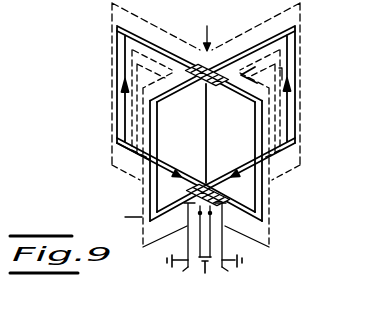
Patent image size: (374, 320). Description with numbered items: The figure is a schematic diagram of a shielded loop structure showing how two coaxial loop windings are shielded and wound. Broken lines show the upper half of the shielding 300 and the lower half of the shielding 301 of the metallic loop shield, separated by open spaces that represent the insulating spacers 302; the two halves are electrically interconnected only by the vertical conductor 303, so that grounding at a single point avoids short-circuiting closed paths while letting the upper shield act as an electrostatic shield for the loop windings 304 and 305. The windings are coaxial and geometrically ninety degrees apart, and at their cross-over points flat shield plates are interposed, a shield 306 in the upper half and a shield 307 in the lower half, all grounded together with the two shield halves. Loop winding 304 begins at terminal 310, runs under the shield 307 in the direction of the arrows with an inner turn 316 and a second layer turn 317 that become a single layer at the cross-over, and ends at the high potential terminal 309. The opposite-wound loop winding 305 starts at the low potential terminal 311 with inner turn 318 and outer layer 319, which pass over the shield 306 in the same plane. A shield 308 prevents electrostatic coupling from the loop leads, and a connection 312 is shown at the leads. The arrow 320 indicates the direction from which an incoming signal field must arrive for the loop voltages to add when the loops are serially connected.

The upper half of the metallic loop shield 300 is at (112, 18).
The lower half of the metallic loop shield 301 is at (112, 93).
The insulating spacers 302 is at (112, 58).
The vertical conductor 303 is at (208, 127).
The loop winding 304 is at (218, 208).
The loop winding 305 is at (119, 216).
The flat shield in the upper half 306 is at (198, 64).
The flat shield in the lower half 307 is at (226, 196).
The shield 308 is at (205, 276).
The high potential terminal 309 is at (256, 271).
The terminal 310 is at (240, 281).
The low potential terminal 311 is at (184, 270).
The left terminal connection 312 is at (147, 269).
The inner turn 316 is at (117, 144).
The turn 317 is at (123, 123).
The turn 318 is at (296, 144).
The outer layer 319 is at (290, 117).
The arrow 320 is at (215, 27).